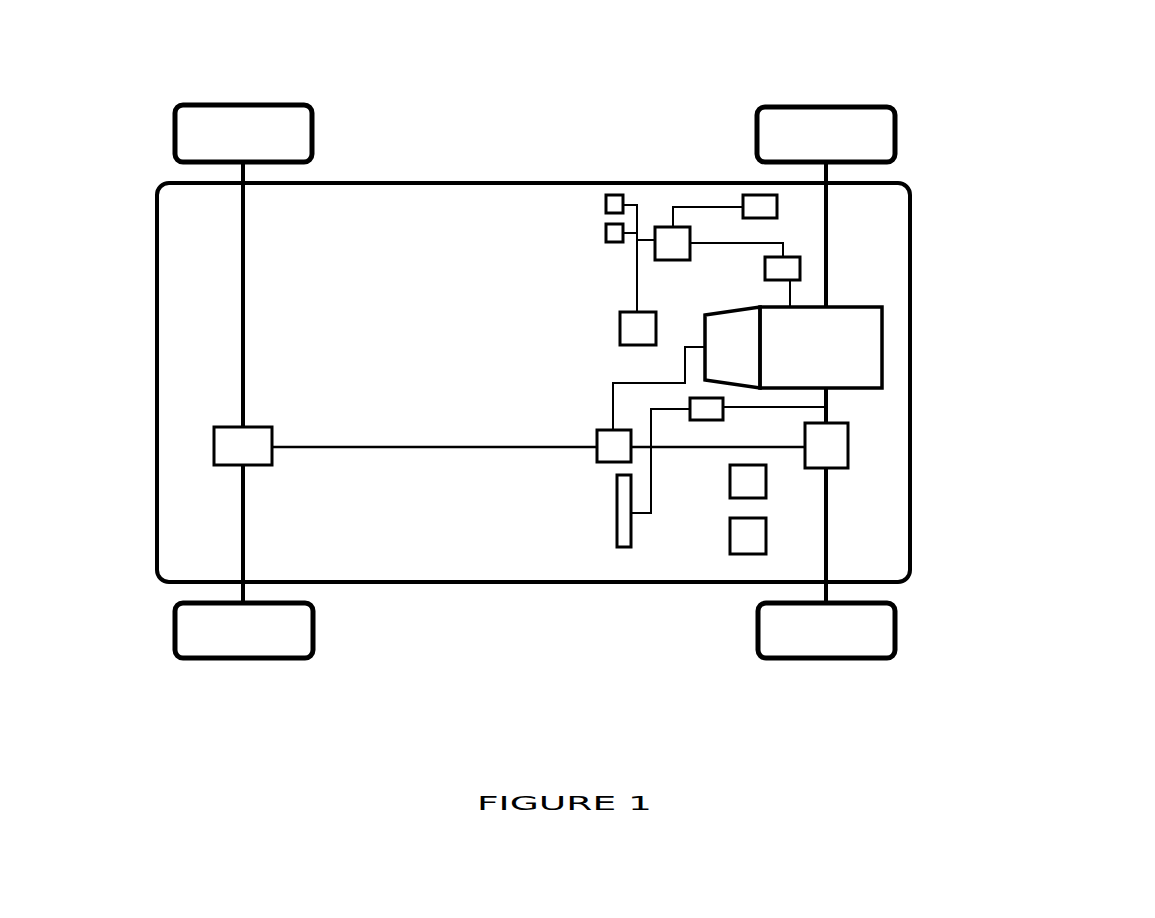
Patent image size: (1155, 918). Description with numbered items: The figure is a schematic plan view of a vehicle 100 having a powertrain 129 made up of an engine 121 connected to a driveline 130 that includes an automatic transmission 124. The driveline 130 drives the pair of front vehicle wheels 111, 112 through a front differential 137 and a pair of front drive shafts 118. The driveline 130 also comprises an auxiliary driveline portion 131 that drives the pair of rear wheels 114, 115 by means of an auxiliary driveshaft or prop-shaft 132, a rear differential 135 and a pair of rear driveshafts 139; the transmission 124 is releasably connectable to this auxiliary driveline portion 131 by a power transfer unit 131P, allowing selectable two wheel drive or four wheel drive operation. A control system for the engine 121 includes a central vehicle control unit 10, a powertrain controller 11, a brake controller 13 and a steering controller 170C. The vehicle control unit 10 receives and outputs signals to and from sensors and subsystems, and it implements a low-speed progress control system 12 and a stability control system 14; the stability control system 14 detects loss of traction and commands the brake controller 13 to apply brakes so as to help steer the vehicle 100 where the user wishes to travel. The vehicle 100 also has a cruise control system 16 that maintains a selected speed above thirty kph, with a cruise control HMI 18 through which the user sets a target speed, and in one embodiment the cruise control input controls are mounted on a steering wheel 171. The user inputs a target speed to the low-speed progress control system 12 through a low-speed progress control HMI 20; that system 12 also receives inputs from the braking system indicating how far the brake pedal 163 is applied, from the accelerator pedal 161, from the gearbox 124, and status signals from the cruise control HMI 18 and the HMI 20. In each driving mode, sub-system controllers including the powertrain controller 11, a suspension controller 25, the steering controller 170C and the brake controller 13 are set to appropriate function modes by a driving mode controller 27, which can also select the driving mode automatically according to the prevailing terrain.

The vehicle 100 is at (1055, 124).
The powertrain 129 is at (1047, 378).
The driveline 130 is at (1014, 563).
The auxiliary driveline portion 131 is at (429, 630).
The front vehicle wheel 111 is at (873, 128).
The front vehicle wheel 112 is at (873, 642).
The rear wheel 114 is at (217, 128).
The rear wheel 115 is at (202, 637).
The front drive shaft 118 is at (826, 225).
The rear driveshaft 139 is at (243, 273).
The rear differential 135 is at (214, 448).
The front differential 137 is at (840, 445).
The auxiliary driveshaft or prop-shaft 132 is at (393, 447).
The power transfer unit 131P is at (607, 452).
The engine 121 is at (852, 333).
The automatic transmission 124 is at (732, 325).
The powertrain controller 11 is at (785, 270).
The brake controller 13 is at (753, 203).
The vehicle control unit 10 is at (615, 140).
The low-speed progress control system 12 is at (615, 140).
The stability control system 14 is at (615, 140).
The cruise control system 16 is at (665, 233).
The driving mode controller 27 is at (612, 203).
The suspension controller 25 is at (612, 232).
The cruise control HMI 18 is at (524, 226).
The low-speed progress control HMI 20 is at (625, 320).
The steering controller 170C is at (705, 412).
The steering wheel 171 is at (623, 543).
The brake pedal 163 is at (715, 552).
The accelerator pedal 161 is at (747, 543).